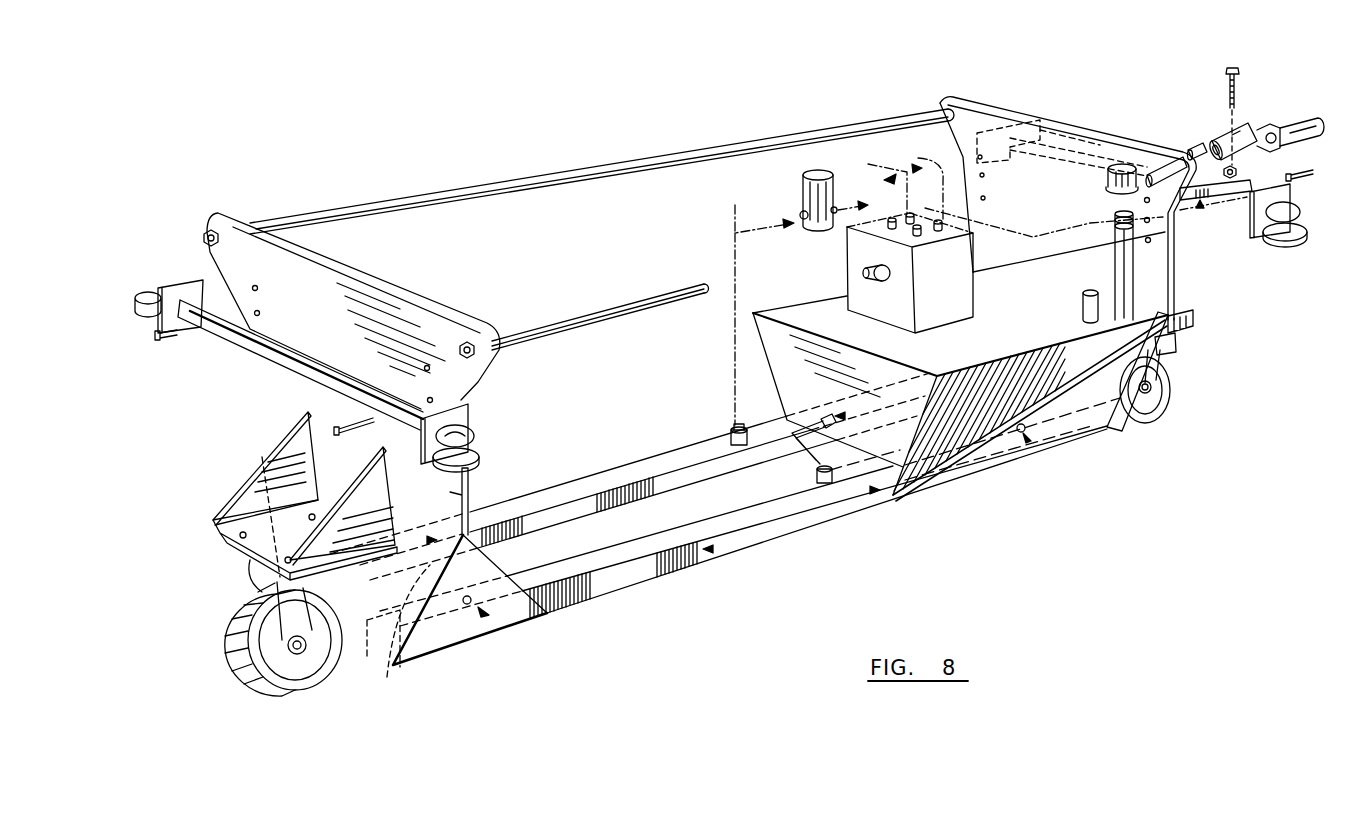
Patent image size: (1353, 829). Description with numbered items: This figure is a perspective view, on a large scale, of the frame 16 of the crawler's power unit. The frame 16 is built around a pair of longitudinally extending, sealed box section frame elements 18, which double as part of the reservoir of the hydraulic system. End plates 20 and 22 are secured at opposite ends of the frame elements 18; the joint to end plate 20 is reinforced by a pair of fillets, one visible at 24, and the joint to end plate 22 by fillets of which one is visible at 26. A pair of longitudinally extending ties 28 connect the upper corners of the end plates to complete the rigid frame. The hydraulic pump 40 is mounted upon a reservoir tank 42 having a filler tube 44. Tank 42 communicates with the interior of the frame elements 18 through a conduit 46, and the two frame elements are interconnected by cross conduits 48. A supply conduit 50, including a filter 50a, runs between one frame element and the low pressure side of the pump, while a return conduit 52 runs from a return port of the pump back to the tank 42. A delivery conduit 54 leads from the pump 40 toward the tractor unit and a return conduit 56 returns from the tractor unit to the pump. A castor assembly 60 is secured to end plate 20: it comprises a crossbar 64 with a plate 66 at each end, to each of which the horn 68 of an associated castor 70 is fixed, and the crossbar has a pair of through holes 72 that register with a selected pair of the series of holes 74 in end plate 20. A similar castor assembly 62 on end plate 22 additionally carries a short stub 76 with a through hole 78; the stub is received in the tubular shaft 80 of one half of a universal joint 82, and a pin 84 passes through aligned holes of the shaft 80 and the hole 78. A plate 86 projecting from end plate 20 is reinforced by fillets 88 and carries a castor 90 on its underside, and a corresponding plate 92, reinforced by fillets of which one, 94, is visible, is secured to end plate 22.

The frame 16 is at (682, 582).
The frame elements 18 is at (617, 470).
The end plate 20 is at (470, 497).
The end plate 22 is at (1158, 272).
The fillet 24 is at (460, 640).
The fillet 26 is at (1128, 416).
The ties 28 is at (530, 180).
The hydraulic pump 40 is at (990, 297).
The reservoir tank 42 is at (960, 366).
The filler tube 44 is at (1118, 259).
The conduit 46 is at (818, 486).
The cross conduits 48 is at (1021, 436).
The supply conduit 50 is at (735, 206).
The filter 50a is at (803, 203).
The return conduit 52 is at (1022, 232).
The delivery conduit 54 is at (874, 179).
The return conduit 56 is at (919, 179).
The castor assembly 60 is at (312, 346).
The castor assembly 62 is at (1201, 210).
The crossbar 64 is at (337, 375).
The plate 66 is at (178, 282).
The horn 68 is at (478, 440).
The castor 70 is at (481, 460).
The through holes 72 is at (258, 452).
The holes 74 is at (262, 314).
The stub 76 is at (1200, 152).
The through hole 78 is at (1183, 157).
The tubular shaft 80 is at (1225, 138).
The universal joint 82 is at (1275, 124).
The pin 84 is at (1238, 70).
The plate 86 is at (250, 543).
The fillets 88 is at (265, 462).
The castor 90 is at (315, 688).
The plate 92 is at (1188, 338).
The fillet 94 is at (1192, 334).